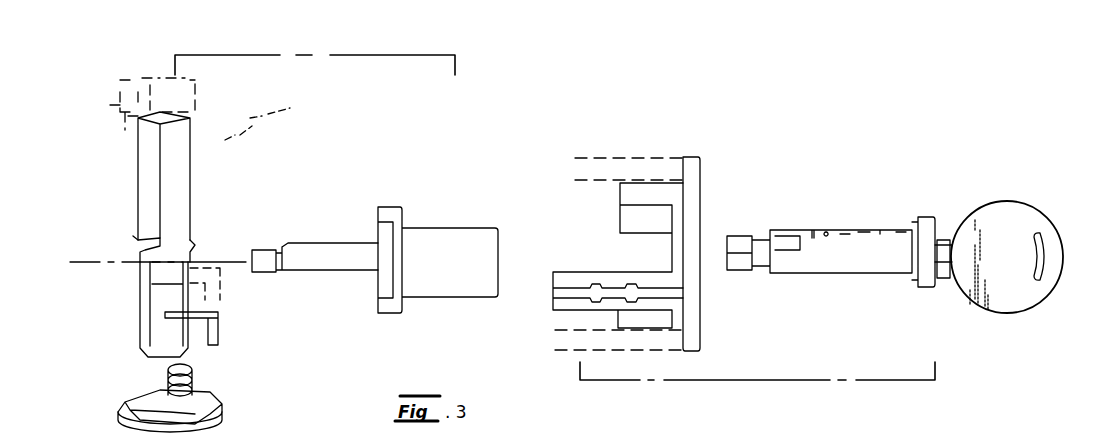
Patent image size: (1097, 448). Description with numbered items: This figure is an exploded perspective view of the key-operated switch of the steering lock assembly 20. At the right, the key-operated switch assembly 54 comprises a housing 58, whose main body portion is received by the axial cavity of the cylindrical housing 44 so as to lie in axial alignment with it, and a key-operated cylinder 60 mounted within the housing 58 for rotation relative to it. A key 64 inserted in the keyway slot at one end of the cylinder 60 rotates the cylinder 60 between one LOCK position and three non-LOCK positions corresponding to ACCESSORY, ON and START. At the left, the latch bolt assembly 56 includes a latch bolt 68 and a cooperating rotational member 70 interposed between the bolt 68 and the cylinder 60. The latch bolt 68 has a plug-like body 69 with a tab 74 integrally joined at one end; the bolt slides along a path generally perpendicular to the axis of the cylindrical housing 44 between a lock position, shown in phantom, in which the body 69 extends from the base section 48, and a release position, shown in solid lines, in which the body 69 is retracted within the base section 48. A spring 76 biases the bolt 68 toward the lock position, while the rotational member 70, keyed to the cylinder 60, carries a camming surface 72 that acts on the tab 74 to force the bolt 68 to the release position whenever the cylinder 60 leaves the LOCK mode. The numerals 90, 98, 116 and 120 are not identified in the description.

The steering lock assembly 20 is at (865, 185).
The cylindrical housing 44 is at (632, 157).
The base section 48 is at (220, 410).
The key-operated switch assembly 54 is at (757, 380).
The latch bolt assembly 56 is at (318, 55).
The housing 58 is at (705, 176).
The key-operated cylinder 60 is at (846, 275).
The key 64 is at (1010, 201).
The latch bolt 68 is at (138, 182).
The plug-like body 69 is at (130, 93).
The rotational member 70 is at (436, 228).
The camming surface 72 is at (340, 274).
The tab 74 is at (226, 286).
The spring 76 is at (194, 370).
The tumbler 90 is at (1030, 438).
The tumbler spring 98 is at (1005, 447).
The tumbler pin 116 is at (901, 440).
The tumbler pin 120 is at (891, 440).